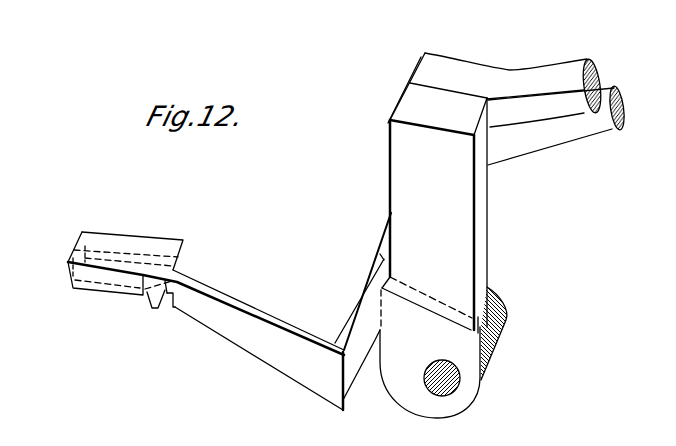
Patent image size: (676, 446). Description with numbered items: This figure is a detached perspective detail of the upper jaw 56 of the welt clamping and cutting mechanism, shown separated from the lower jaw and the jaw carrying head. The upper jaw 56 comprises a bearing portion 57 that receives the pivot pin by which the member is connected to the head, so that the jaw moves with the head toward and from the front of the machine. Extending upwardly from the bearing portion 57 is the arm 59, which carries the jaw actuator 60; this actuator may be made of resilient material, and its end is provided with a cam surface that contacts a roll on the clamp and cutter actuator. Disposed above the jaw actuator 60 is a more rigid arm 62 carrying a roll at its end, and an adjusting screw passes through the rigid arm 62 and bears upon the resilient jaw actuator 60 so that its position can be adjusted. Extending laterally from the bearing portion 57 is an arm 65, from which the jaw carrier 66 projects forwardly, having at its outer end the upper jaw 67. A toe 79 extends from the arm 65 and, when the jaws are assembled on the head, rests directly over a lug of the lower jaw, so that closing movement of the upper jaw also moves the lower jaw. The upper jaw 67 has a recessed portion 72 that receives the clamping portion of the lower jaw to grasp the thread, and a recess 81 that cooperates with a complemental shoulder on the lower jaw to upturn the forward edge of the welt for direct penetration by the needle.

The upper jaw 56 is at (248, 269).
The bearing portion 57 is at (465, 391).
The arm 59 is at (463, 228).
The jaw actuator 60 is at (584, 136).
The rigid arm 62 is at (558, 67).
The arm 65 is at (357, 294).
The jaw carrier 66 is at (273, 360).
The upper jaw 67 is at (143, 298).
The recessed portion 72 is at (68, 277).
The toe 79 is at (375, 341).
The recess 81 is at (170, 294).